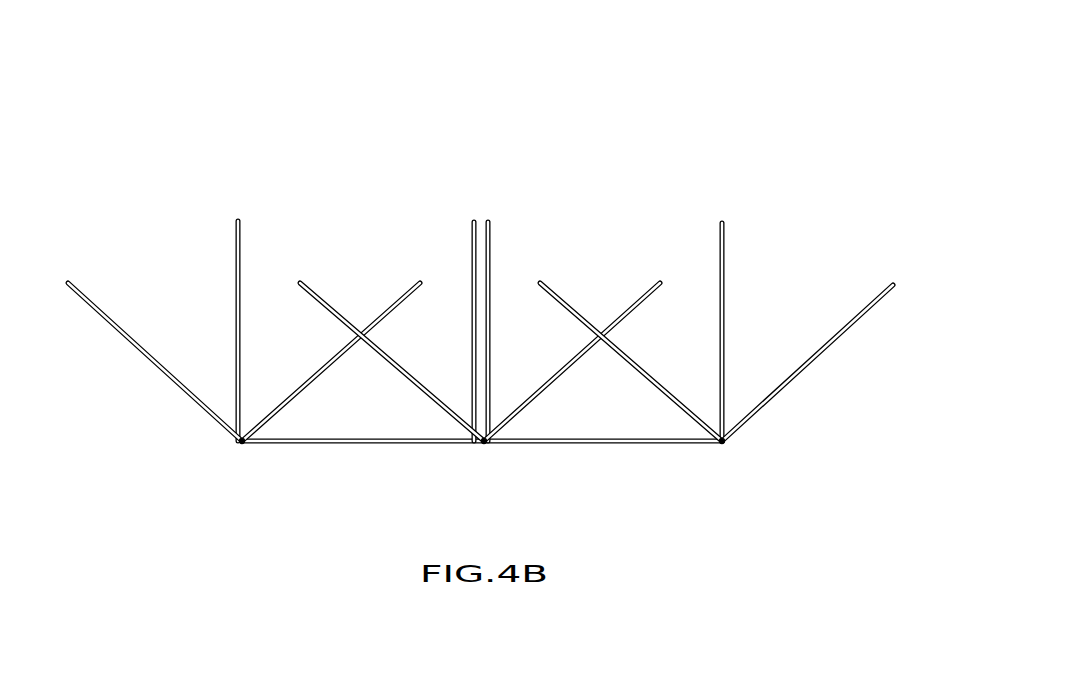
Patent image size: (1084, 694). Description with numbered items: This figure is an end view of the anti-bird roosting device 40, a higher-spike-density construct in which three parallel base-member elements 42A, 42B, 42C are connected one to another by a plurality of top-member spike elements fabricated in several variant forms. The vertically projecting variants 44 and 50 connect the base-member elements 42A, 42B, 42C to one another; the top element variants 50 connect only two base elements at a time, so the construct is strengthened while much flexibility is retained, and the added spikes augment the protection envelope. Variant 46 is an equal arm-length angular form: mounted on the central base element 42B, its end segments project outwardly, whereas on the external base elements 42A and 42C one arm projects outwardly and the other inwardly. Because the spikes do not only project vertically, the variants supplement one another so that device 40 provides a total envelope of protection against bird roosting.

The anti-bird roosting device 40 is at (782, 83).
The base-member element 42A is at (242, 443).
The base-member element 42B is at (484, 444).
The base-member element 42C is at (724, 443).
The top-member spike element variant 44 is at (240, 248).
The top-member spike element variant 46 is at (123, 328).
The top-member spike element variant 50 is at (722, 241).